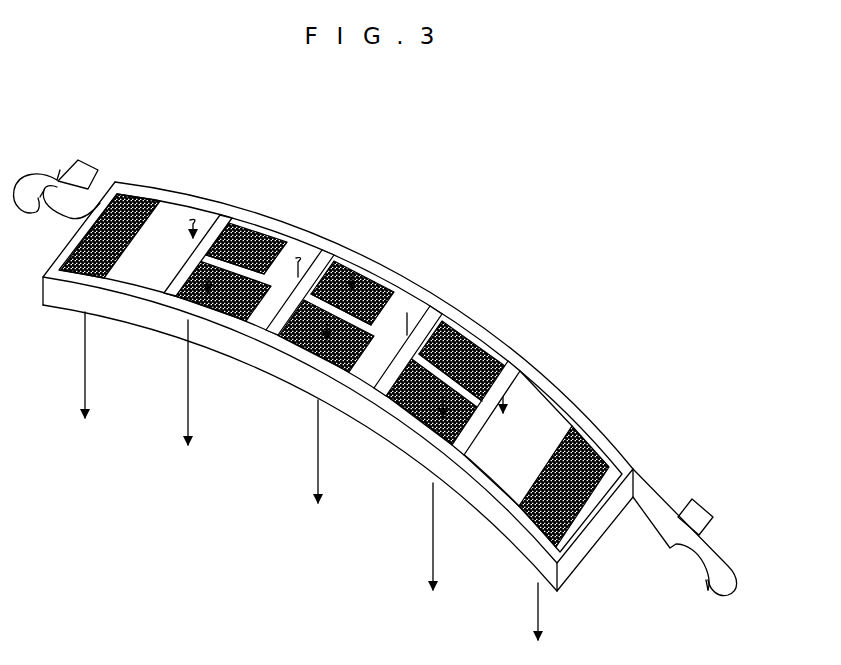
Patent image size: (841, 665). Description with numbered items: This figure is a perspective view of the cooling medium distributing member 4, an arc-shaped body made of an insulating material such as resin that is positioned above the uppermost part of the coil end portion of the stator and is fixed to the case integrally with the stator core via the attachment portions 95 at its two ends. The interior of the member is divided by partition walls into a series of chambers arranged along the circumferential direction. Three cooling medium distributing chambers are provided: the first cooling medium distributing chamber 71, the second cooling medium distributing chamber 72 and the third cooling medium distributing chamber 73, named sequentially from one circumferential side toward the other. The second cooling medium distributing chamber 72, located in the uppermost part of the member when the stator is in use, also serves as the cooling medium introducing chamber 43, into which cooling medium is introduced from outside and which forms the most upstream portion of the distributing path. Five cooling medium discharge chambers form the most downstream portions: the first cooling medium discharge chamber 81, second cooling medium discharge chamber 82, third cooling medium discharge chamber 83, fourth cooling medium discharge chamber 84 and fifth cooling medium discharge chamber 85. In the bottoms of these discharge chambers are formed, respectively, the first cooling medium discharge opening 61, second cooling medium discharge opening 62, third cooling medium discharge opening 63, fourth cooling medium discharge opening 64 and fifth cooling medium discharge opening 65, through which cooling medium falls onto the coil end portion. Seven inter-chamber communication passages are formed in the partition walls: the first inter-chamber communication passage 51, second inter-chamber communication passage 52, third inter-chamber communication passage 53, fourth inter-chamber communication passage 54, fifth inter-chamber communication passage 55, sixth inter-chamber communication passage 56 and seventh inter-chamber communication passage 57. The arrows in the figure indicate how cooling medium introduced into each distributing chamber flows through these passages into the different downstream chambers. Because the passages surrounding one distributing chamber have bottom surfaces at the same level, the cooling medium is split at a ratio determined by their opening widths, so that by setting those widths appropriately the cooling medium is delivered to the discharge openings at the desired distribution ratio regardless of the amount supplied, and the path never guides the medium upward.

The cooling medium distributing member 4 is at (153, 108).
The cooling medium introducing chamber 43 is at (368, 267).
The first inter-chamber communication passage 51 is at (240, 282).
The second inter-chamber communication passage 52 is at (248, 258).
The third inter-chamber communication passage 53 is at (300, 262).
The fourth inter-chamber communication passage 54 is at (390, 280).
The fifth inter-chamber communication passage 55 is at (405, 300).
The sixth inter-chamber communication passage 56 is at (455, 360).
The seventh inter-chamber communication passage 57 is at (492, 370).
The first cooling medium discharge opening 61 is at (80, 255).
The second cooling medium discharge opening 62 is at (190, 307).
The third cooling medium discharge opening 63 is at (310, 358).
The fourth cooling medium discharge opening 64 is at (425, 440).
The fifth cooling medium discharge opening 65 is at (542, 538).
The first cooling medium distributing chamber 71 is at (282, 235).
The second cooling medium distributing chamber 72 is at (360, 290).
The third cooling medium distributing chamber 73 is at (432, 327).
The first cooling medium discharge chamber 81 is at (172, 215).
The second cooling medium discharge chamber 82 is at (257, 320).
The third cooling medium discharge chamber 83 is at (283, 347).
The fourth cooling medium discharge chamber 84 is at (383, 380).
The fifth cooling medium discharge chamber 85 is at (527, 442).
The attachment portions 95 is at (37, 198).